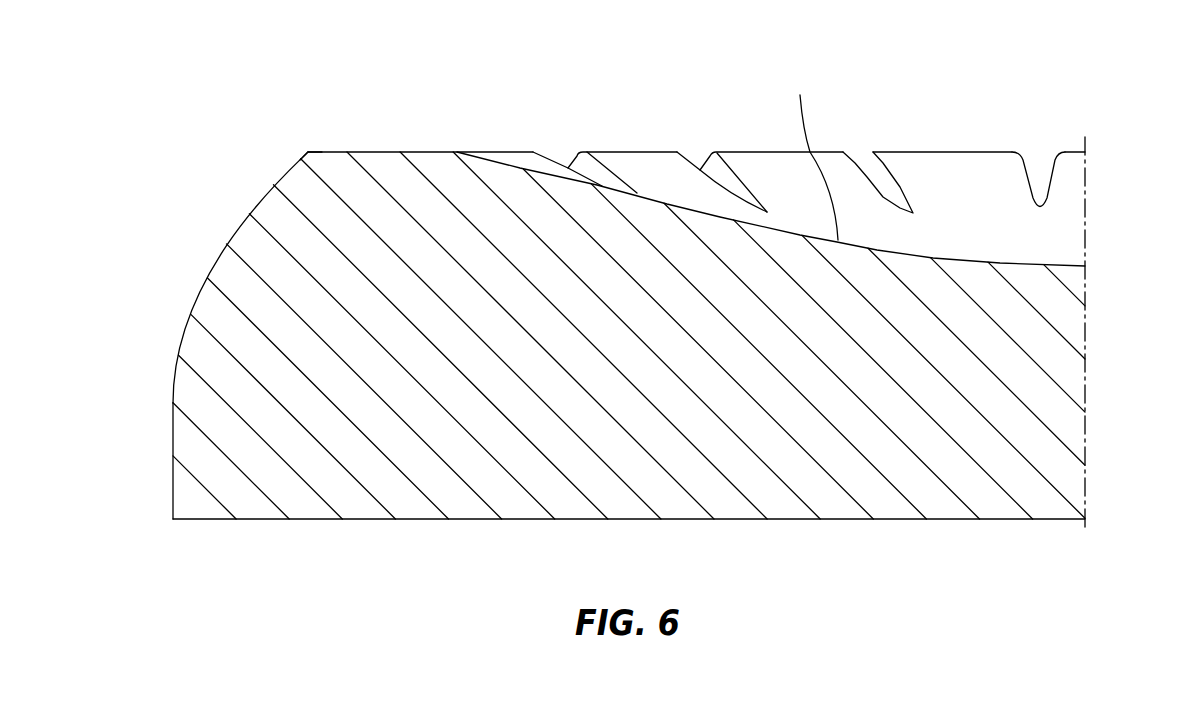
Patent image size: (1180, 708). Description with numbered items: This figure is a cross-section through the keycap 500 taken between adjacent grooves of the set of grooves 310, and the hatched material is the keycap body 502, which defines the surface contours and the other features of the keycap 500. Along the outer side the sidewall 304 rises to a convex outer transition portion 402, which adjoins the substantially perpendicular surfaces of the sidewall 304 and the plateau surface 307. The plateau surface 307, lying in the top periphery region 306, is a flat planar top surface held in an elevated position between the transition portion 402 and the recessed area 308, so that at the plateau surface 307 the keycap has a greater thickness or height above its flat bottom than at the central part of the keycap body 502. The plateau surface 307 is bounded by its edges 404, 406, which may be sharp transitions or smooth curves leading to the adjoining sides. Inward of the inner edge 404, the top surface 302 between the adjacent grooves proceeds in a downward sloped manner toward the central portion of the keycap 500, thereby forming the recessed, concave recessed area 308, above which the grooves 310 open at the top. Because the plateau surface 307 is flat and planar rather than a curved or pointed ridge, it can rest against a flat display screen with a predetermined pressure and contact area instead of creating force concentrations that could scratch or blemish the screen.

The keycap 500 is at (180, 102).
The top surface 302 is at (778, 152).
The sidewall 304 is at (172, 470).
The top periphery region 306 is at (432, 140).
The plateau surface 307 is at (382, 151).
The recessed area 308 is at (1047, 237).
The set of grooves 310 is at (883, 170).
The transition portion 402 is at (203, 290).
The inner edge 404 is at (457, 152).
The edge 406 is at (308, 151).
The keycap body 502 is at (1045, 387).